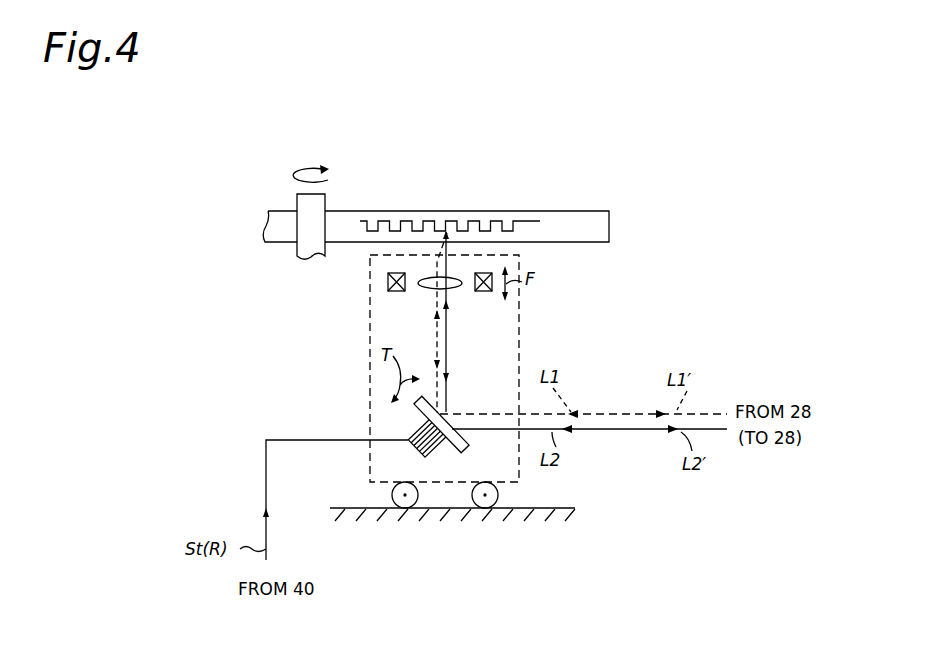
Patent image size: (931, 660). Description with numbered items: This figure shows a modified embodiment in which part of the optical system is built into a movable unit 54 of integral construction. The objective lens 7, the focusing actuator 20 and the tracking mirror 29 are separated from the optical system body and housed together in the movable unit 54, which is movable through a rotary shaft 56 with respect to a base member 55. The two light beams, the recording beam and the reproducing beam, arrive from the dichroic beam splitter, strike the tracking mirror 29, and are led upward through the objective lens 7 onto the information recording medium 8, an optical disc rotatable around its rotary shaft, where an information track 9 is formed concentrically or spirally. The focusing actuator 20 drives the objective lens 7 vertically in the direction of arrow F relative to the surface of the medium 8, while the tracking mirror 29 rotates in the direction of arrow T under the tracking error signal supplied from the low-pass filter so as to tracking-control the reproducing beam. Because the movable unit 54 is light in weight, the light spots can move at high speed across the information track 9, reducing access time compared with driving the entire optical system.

The objective lens 7 is at (425, 289).
The information recording medium 8 is at (568, 218).
The information track 9 is at (447, 221).
The focusing actuator 20 is at (483, 292).
The tracking mirror 29 is at (440, 447).
The movable unit 54 is at (520, 322).
The base member 55 is at (538, 568).
The rotary shaft 56 is at (499, 497).